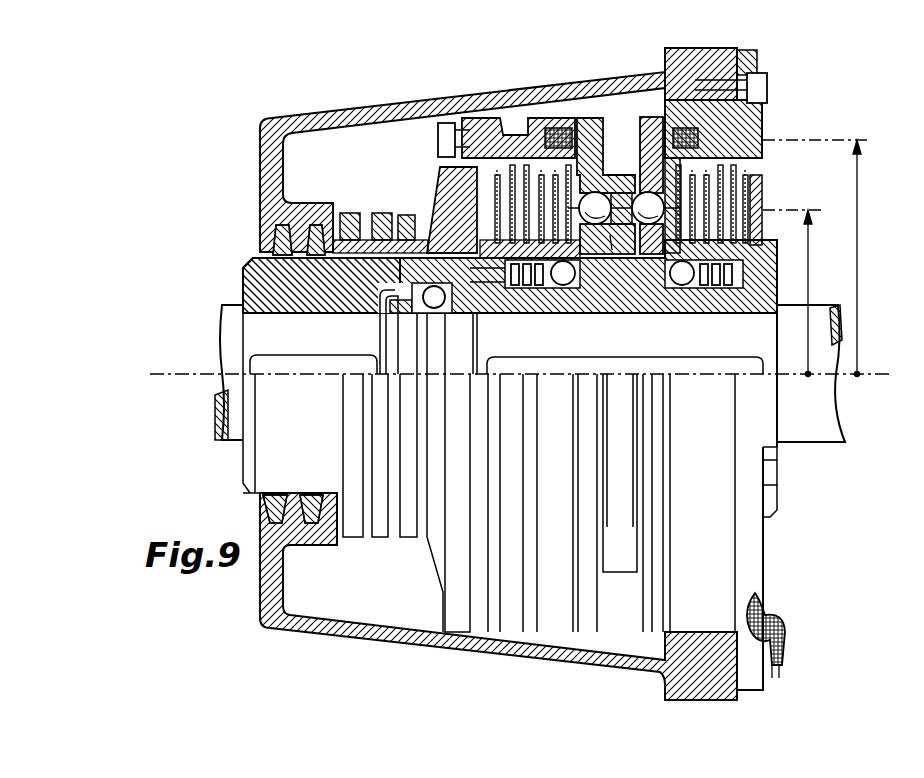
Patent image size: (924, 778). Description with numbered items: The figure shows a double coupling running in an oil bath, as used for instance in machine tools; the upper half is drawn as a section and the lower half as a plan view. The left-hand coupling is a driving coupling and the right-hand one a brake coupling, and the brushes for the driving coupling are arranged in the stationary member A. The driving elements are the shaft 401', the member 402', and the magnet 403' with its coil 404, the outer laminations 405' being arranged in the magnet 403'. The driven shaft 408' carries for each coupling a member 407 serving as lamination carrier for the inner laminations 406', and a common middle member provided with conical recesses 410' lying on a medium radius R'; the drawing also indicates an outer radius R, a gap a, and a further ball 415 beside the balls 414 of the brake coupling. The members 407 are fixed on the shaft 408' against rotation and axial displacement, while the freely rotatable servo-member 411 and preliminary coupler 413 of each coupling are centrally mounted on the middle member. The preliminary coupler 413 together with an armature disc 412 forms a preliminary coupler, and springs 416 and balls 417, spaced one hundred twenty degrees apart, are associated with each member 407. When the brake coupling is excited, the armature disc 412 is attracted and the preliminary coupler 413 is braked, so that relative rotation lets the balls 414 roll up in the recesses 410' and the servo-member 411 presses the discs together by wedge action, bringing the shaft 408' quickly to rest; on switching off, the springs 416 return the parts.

The stationary member A is at (268, 192).
The shaft 401' is at (203, 372).
The member 402' is at (292, 284).
The magnet 403' is at (506, 111).
The coil 404 is at (557, 127).
The pole gap a is at (597, 111).
The outer laminations 405' is at (607, 200).
The inner laminations 406' is at (604, 204).
The member 407 is at (476, 313).
The driven shaft 408' is at (838, 373).
The recesses 410' is at (624, 257).
The servo-member 411 is at (585, 295).
The armature disc 412 is at (655, 617).
The preliminary coupler 413 is at (647, 583).
The balls 414 is at (640, 190).
The ball 415 is at (603, 185).
The springs 416 is at (513, 290).
The balls 417 is at (564, 290).
The medium radius R' is at (794, 293).
The outer radius R is at (815, 258).